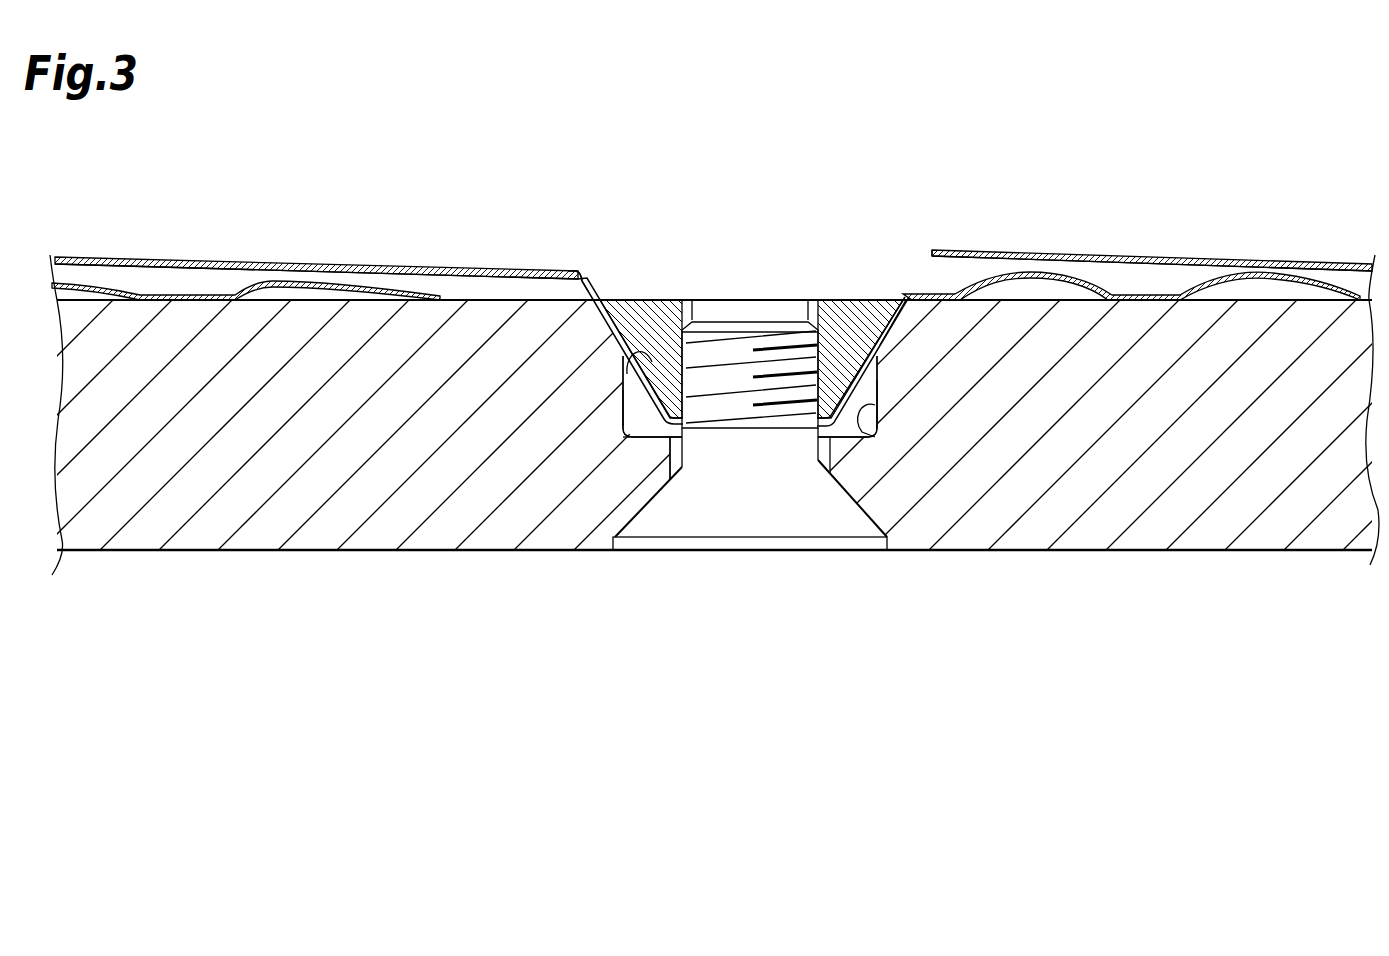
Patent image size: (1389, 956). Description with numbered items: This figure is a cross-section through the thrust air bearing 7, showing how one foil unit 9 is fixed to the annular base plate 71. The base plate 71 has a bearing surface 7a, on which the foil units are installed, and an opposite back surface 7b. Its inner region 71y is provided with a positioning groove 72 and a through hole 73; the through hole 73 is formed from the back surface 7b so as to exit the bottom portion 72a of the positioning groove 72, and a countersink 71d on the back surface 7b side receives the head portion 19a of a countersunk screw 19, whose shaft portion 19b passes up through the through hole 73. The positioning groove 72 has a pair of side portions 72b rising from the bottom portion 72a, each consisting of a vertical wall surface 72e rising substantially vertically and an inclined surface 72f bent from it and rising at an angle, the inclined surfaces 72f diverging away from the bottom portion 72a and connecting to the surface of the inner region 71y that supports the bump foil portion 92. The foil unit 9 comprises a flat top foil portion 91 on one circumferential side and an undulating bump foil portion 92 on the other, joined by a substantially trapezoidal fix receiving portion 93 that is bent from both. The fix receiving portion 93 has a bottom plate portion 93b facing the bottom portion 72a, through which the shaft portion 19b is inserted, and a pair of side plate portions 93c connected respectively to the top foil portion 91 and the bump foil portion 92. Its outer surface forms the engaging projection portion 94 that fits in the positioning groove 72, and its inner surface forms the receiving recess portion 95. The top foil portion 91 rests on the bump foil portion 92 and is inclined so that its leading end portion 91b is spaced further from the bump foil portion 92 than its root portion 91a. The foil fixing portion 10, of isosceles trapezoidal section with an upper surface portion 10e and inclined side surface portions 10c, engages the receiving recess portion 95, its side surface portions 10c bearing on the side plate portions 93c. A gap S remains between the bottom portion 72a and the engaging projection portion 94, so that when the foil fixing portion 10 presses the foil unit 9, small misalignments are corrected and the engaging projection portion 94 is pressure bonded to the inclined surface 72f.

The thrust air bearing 7 is at (1326, 555).
The bearing surface 7a is at (255, 291).
The back surface 7b is at (147, 556).
The base plate 71 is at (1218, 465).
The inner region 71y is at (1028, 300).
The countersink 71d is at (868, 520).
The through hole 73 is at (811, 462).
The foil fixing portion 10 is at (651, 296).
The side surface portion 10c is at (567, 302).
The upper surface portion 10e is at (852, 300).
The foil unit 9 is at (104, 282).
The top foil portion 91 is at (483, 270).
The root portion 91a is at (582, 279).
The leading end portion 91b is at (934, 250).
The bump foil portion 92 is at (318, 288).
The fix receiving portion 93 is at (773, 464).
The bottom plate portion 93b is at (675, 434).
The side plate portion 93c is at (648, 416).
The engaging projection portion 94 is at (644, 363).
The receiving recess portion 95 is at (640, 408).
The gap S is at (653, 432).
The positioning groove 72 is at (968, 522).
The bottom portion 72a is at (857, 428).
The side portion 72b is at (988, 501).
The vertical wall surface 72e is at (860, 410).
The inclined surface 72f is at (920, 310).
The countersunk screw 19 is at (750, 443).
The head portion 19a is at (815, 540).
The shaft portion 19b is at (738, 350).